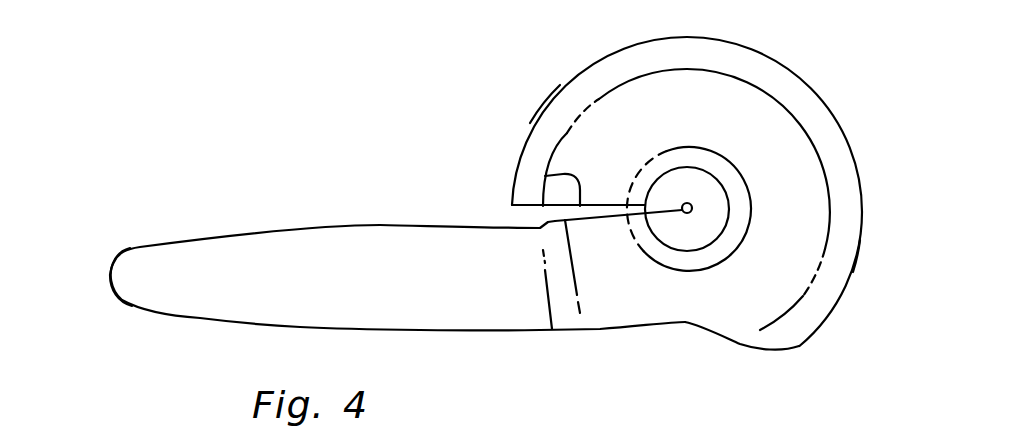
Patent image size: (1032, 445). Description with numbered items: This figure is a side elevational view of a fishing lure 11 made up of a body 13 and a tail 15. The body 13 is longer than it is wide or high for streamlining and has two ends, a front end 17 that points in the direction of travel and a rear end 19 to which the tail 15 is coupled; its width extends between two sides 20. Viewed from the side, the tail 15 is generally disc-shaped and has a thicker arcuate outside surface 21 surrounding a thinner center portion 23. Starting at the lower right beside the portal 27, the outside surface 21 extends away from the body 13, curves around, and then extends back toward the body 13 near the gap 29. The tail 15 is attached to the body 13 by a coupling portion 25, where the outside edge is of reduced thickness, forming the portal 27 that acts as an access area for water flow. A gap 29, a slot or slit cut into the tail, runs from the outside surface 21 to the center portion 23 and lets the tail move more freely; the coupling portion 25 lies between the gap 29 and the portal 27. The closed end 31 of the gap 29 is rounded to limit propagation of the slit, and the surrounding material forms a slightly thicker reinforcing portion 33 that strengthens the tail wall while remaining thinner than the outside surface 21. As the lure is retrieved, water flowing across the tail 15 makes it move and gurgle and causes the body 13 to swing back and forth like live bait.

The fishing lure 11 is at (258, 172).
The body 13 is at (343, 243).
The tail 15 is at (812, 91).
The front end 17 is at (108, 276).
The rear end 19 is at (518, 288).
The sides 20 is at (525, 145).
The outside surface 21 is at (530, 123).
The center portion 23 is at (695, 100).
The coupling portion 25 is at (605, 288).
The portal 27 is at (693, 327).
The gap 29 is at (545, 176).
The closed end 31 is at (688, 214).
The reinforcing portion 33 is at (706, 204).